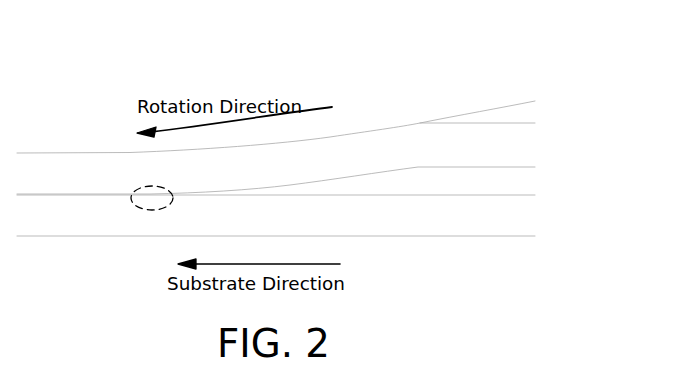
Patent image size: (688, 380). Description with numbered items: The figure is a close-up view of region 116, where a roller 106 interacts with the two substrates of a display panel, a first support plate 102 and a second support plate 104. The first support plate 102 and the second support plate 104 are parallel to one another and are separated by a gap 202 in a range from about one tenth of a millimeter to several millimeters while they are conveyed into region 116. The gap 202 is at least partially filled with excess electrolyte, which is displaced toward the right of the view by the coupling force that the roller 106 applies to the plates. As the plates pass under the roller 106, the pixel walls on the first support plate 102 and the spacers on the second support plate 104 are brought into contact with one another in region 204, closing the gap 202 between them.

The first support plate 102 is at (358, 230).
The second support plate 104 is at (225, 178).
The roller 106 is at (355, 65).
The region 116 is at (502, 55).
The gap 202 is at (508, 193).
The region 204 is at (150, 211).